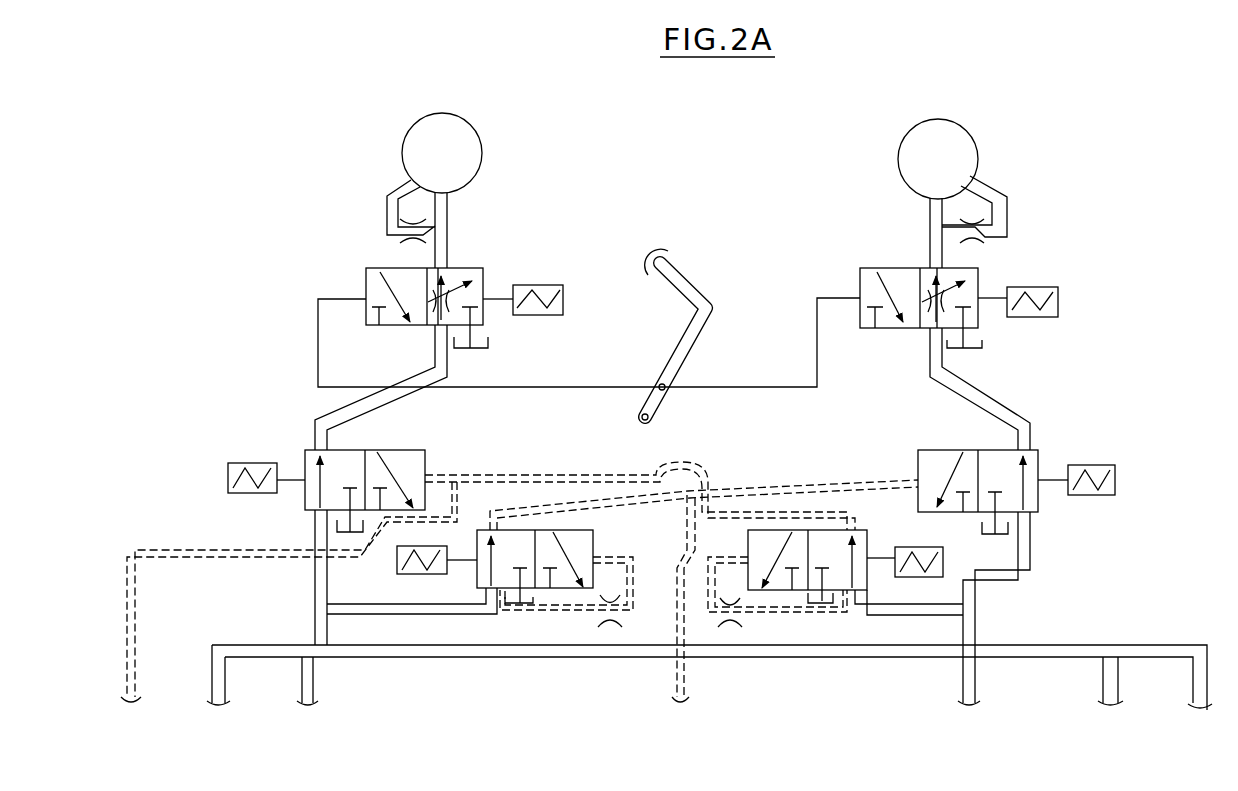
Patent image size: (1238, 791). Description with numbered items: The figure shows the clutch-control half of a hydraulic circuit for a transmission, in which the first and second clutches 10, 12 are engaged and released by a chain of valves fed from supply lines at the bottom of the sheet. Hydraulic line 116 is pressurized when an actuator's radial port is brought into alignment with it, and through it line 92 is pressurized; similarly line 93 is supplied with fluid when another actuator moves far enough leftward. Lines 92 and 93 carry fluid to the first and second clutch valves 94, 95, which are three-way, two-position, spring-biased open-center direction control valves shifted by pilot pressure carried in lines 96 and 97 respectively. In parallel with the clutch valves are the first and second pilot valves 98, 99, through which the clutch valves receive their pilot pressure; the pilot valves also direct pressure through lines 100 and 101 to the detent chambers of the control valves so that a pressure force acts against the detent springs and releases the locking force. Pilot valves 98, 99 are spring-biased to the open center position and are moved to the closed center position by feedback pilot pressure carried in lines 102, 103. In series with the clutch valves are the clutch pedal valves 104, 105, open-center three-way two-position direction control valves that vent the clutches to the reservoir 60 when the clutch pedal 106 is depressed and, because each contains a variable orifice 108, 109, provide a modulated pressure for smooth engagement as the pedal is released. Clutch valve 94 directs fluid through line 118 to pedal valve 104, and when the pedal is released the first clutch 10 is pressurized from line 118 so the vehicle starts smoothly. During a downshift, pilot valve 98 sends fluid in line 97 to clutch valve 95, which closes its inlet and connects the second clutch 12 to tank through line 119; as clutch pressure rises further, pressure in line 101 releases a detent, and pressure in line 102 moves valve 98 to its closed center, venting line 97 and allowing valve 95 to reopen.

The first clutch 10 is at (460, 132).
The second clutch 12 is at (957, 133).
The hydraulic reservoir 60 is at (488, 345).
The hydraulic line 92 is at (313, 628).
The hydraulic line 93 is at (975, 620).
The first clutch valve 94 is at (305, 462).
The second clutch valve 95 is at (1042, 462).
The pilot line 96 is at (540, 475).
The pilot line 97 is at (842, 478).
The first pilot valve 98 is at (593, 542).
The second pilot valve 99 is at (867, 542).
The line 100 is at (213, 543).
The line 101 is at (687, 671).
The feedback pilot line 102 is at (636, 594).
The feedback pilot line 103 is at (760, 613).
The first clutch pedal valve 104 is at (366, 288).
The second clutch pedal valve 105 is at (978, 273).
The clutch pedal 106 is at (683, 285).
The variable orifice 108 is at (440, 273).
The variable orifice 109 is at (923, 275).
The hydraulic line 116 is at (227, 677).
The line 118 is at (387, 405).
The line 119 is at (1007, 403).